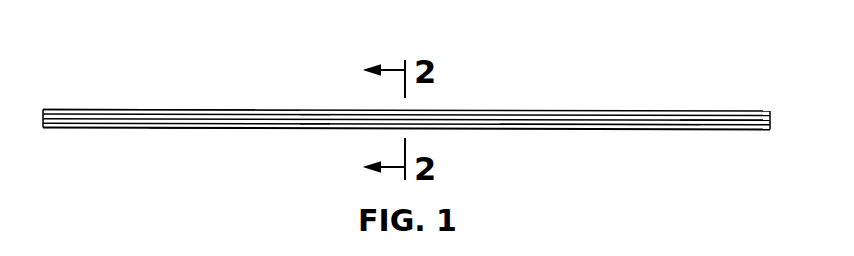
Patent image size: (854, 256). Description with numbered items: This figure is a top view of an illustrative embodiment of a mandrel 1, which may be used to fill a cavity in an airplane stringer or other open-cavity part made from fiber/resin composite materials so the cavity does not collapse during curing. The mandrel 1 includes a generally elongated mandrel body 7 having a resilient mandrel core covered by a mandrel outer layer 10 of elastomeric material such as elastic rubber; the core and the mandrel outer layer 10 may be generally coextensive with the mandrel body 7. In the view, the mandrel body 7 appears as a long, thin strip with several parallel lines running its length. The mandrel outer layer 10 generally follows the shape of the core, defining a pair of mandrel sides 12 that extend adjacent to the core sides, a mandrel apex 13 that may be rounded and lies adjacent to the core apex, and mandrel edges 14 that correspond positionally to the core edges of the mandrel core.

The mandrel 1 is at (644, 82).
The mandrel body 7 is at (99, 98).
The mandrel outer layer 10 is at (590, 136).
The mandrel sides 12 is at (203, 108).
The mandrel apex 13 is at (704, 118).
The mandrel edges 14 is at (314, 108).